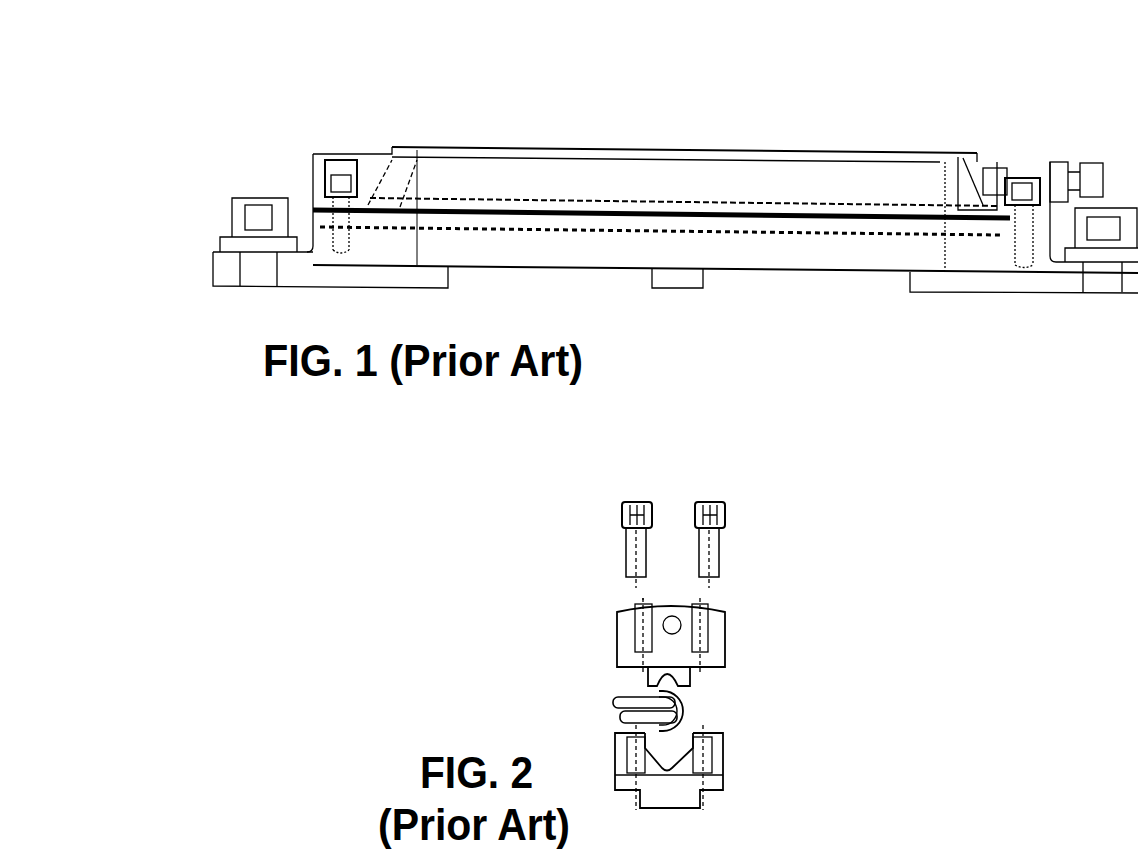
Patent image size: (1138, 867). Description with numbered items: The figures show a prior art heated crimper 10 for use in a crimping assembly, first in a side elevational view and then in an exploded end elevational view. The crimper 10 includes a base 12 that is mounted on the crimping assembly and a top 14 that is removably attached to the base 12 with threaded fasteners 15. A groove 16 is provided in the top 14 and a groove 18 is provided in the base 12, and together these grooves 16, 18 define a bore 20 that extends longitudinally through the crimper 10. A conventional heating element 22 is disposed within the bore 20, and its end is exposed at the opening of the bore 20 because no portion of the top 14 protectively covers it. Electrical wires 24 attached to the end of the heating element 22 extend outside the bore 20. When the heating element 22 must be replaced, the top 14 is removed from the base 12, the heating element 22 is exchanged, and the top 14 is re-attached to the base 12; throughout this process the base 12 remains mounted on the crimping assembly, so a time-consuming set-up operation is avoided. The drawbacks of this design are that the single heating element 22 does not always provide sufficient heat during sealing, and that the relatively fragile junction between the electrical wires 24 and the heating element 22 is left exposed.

In FIG. 1, the crimper 10 is at (272, 103).
In FIG. 2, the crimper 10 is at (547, 572).
In FIG. 1, the base 12 is at (767, 258).
In FIG. 2, the base 12 is at (727, 760).
In FIG. 1, the top 14 is at (782, 182).
In FIG. 2, the top 14 is at (732, 632).
In FIG. 1, the threaded fasteners 15 is at (342, 153).
In FIG. 2, the threaded fasteners 15 is at (622, 515).
In FIG. 2, the groove 16 is at (650, 690).
In FIG. 2, the groove 18 is at (667, 752).
In FIG. 1, the bore 20 is at (645, 205).
In FIG. 2, the heating element 22 is at (685, 698).
In FIG. 2, the electrical wires 24 is at (623, 723).